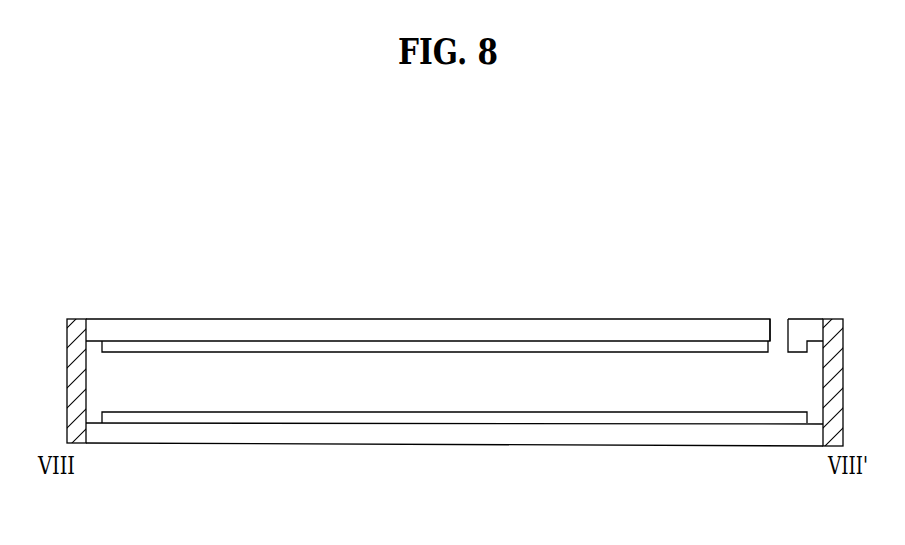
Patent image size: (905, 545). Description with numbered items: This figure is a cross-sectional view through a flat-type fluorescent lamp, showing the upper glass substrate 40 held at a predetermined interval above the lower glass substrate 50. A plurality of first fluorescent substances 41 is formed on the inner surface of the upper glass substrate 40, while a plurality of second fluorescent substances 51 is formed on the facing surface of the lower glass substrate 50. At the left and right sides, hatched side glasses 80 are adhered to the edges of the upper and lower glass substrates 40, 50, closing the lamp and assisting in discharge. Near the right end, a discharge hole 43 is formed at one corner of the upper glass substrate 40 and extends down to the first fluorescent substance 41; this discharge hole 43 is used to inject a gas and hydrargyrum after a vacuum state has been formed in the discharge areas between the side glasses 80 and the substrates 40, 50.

The upper glass substrate 40 is at (320, 330).
The first fluorescent substance 41 is at (541, 345).
The discharge hole 43 is at (781, 331).
The lower glass substrate 50 is at (247, 434).
The second fluorescent substance 51 is at (582, 418).
The side glass 80 is at (73, 319).